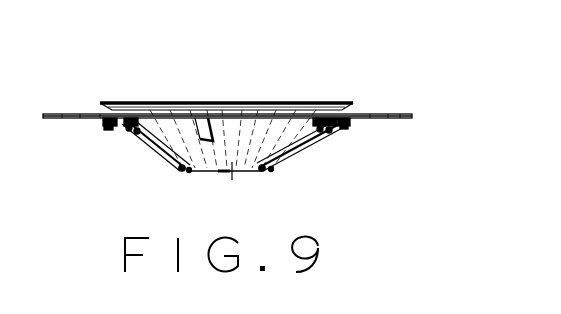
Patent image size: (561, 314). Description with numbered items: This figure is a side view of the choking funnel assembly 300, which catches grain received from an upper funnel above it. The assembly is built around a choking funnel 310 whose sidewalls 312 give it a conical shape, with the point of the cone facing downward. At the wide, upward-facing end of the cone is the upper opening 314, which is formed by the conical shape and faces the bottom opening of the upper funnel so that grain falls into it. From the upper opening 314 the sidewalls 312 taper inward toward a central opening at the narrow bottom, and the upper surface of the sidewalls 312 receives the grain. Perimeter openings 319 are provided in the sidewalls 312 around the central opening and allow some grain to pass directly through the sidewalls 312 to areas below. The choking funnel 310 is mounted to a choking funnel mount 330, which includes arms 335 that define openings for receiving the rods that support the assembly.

The choking funnel assembly 300 is at (231, 116).
The choking funnel 310 is at (197, 102).
The sidewalls 312 is at (233, 178).
The upper opening 314 is at (243, 91).
The perimeter openings 319 is at (203, 130).
The choking funnel mount 330 is at (362, 118).
The arms 335 is at (70, 112).